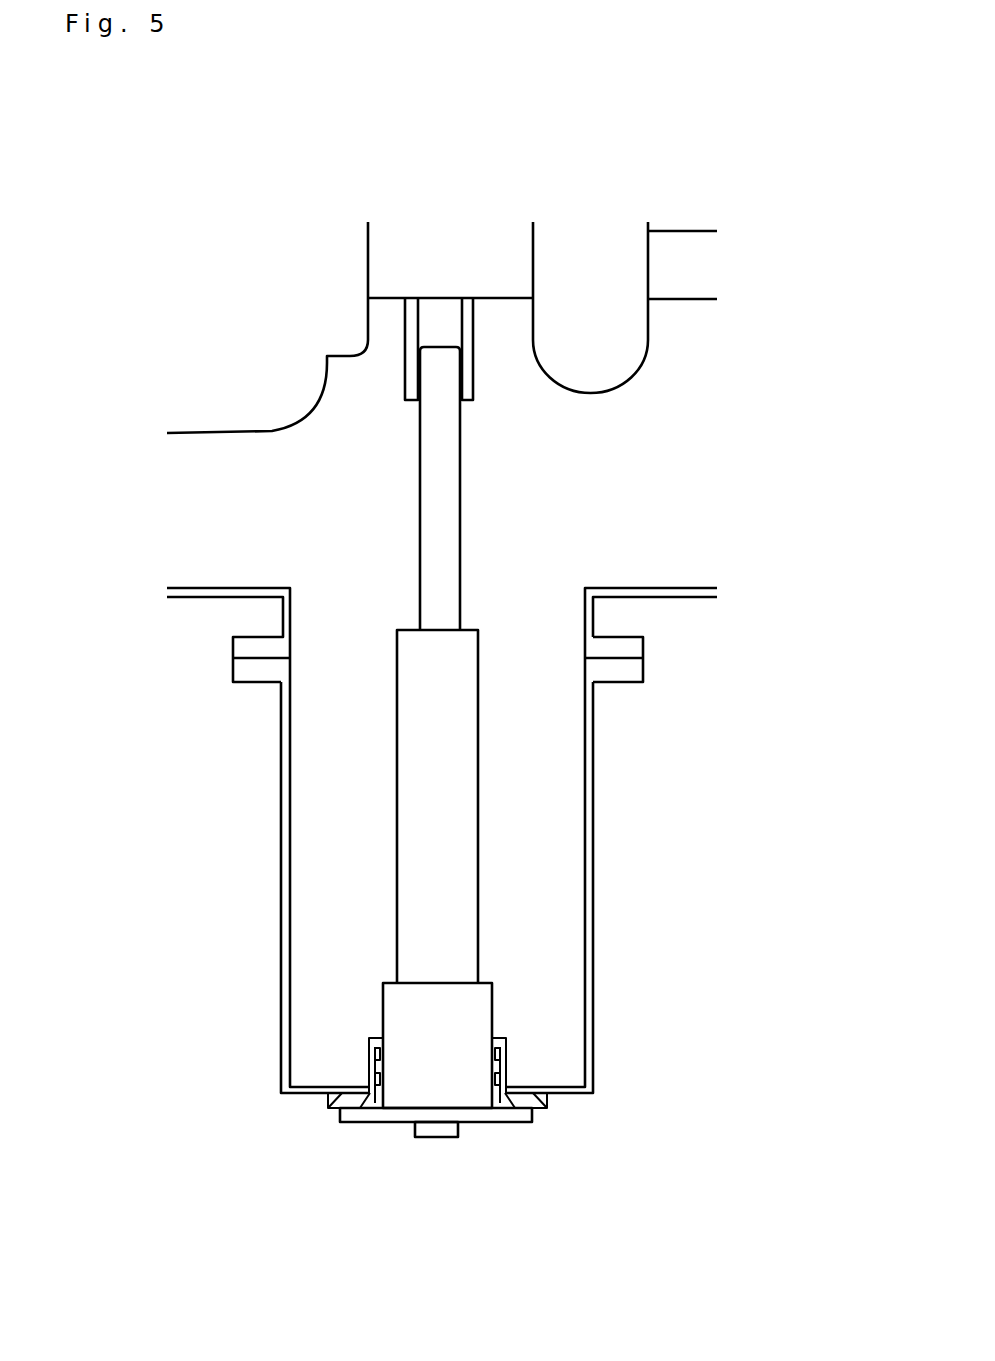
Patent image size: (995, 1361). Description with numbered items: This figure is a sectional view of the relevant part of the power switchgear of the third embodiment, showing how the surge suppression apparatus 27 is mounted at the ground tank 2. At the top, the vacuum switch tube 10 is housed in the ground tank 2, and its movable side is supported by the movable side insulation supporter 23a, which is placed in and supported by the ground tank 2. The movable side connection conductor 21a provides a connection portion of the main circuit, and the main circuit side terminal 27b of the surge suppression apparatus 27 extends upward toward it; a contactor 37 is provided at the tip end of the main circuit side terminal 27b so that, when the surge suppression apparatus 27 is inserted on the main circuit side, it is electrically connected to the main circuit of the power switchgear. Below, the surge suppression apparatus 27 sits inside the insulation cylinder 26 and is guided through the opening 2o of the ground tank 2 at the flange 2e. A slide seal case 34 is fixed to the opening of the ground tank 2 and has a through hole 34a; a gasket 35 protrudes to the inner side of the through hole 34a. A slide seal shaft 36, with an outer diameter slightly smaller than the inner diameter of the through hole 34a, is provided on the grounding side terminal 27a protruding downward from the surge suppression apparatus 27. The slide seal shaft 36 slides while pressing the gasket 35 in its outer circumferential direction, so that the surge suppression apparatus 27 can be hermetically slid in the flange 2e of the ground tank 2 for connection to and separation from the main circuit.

The ground tank 2 is at (670, 600).
The opening 2o is at (327, 592).
The flange 2e is at (623, 649).
The vacuum switch tube 10 is at (680, 300).
The movable side connection conductor 21a is at (435, 265).
The movable side insulation supporter 23a is at (202, 435).
The insulation cylinder 26 is at (595, 830).
The surge suppression apparatus 27 is at (457, 733).
The grounding side terminal 27a is at (437, 1137).
The main circuit side terminal 27b is at (437, 520).
The slide seal case 34 is at (503, 1067).
The through hole 34a is at (493, 1040).
The gasket 35 is at (370, 1058).
The slide seal shaft 36 is at (463, 1107).
The contactor 37 is at (473, 363).